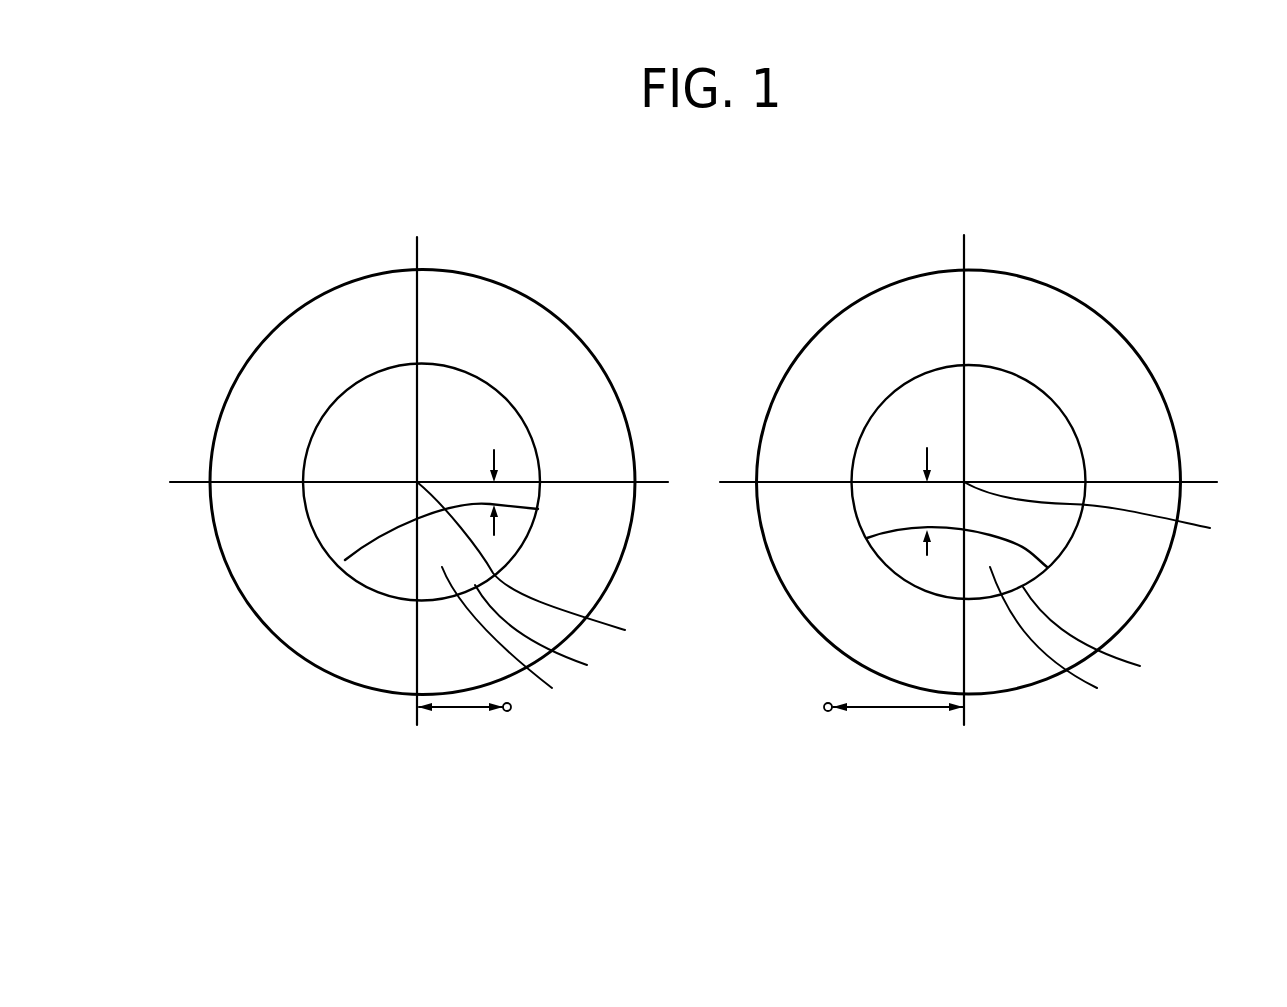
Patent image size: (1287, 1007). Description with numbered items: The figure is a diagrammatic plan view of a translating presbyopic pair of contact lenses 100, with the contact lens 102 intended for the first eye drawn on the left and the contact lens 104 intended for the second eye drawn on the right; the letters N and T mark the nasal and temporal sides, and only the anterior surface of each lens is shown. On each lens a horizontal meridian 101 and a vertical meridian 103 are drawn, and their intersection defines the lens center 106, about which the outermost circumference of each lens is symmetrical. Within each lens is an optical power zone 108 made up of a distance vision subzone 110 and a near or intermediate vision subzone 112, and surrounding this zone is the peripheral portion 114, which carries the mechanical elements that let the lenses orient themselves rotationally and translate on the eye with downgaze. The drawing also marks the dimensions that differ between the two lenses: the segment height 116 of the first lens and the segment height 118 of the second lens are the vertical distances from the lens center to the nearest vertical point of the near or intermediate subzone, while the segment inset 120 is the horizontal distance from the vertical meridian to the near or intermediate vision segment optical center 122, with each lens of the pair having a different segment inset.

The pair of contact lenses 100 is at (745, 208).
The horizontal meridian 101 is at (637, 479).
The contact lens for the first eye 102 is at (280, 320).
The vertical meridian 103 is at (417, 252).
The contact lens for the second eye 104 is at (1112, 320).
The lens center 106 is at (799, 566).
The optical power zone 108 is at (826, 635).
The distance vision subzone 110 is at (463, 393).
The near or intermediate vision subzone 112 is at (790, 646).
The peripheral portion 114 is at (568, 552).
The segment height of the first contact lens 116 is at (493, 493).
The segment height of the second contact lens 118 is at (927, 505).
The segment inset 120 is at (455, 708).
The near or intermediate vision segment optical center 122 is at (508, 711).